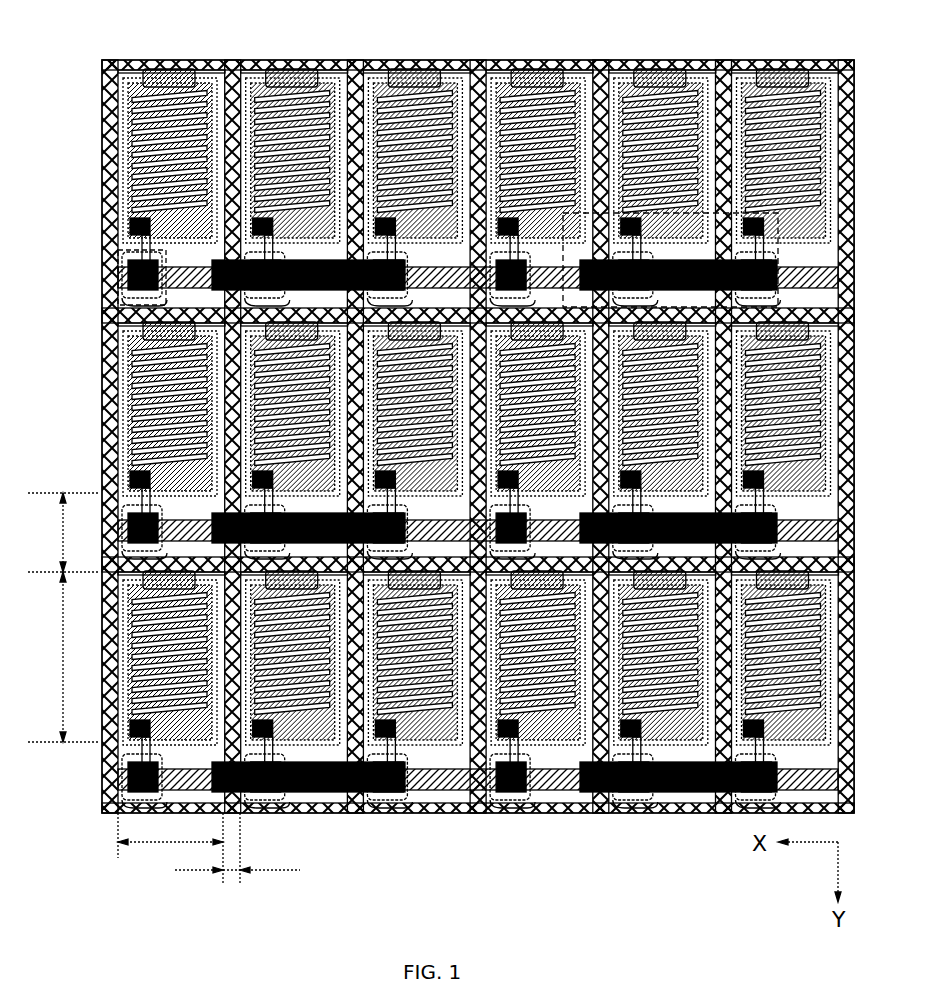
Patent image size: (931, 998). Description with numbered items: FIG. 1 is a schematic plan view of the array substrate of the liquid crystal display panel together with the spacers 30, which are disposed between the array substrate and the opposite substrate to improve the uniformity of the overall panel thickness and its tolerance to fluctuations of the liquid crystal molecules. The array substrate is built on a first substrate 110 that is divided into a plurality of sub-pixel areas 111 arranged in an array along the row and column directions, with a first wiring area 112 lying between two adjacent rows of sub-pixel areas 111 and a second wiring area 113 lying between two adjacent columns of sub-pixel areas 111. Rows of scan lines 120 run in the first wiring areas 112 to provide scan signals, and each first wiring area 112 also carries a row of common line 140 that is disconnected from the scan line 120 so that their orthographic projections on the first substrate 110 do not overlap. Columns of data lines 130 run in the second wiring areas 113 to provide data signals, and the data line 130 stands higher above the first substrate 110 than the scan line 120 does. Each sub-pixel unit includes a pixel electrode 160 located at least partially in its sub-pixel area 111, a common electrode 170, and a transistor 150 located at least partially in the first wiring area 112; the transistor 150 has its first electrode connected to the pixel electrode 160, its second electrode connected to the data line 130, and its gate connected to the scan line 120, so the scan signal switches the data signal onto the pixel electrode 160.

The spacer 30 is at (325, 800).
The first substrate 110 is at (435, 793).
The sub-pixel area 111 is at (121, 727).
The first wiring area 112 is at (60, 532).
The second wiring area 113 is at (238, 848).
The scan line 120 is at (543, 783).
The data line 130 is at (488, 58).
The common line 140 is at (583, 60).
The transistor 150 is at (102, 252).
The pixel electrode 160 is at (103, 121).
The common electrode 170 is at (103, 83).